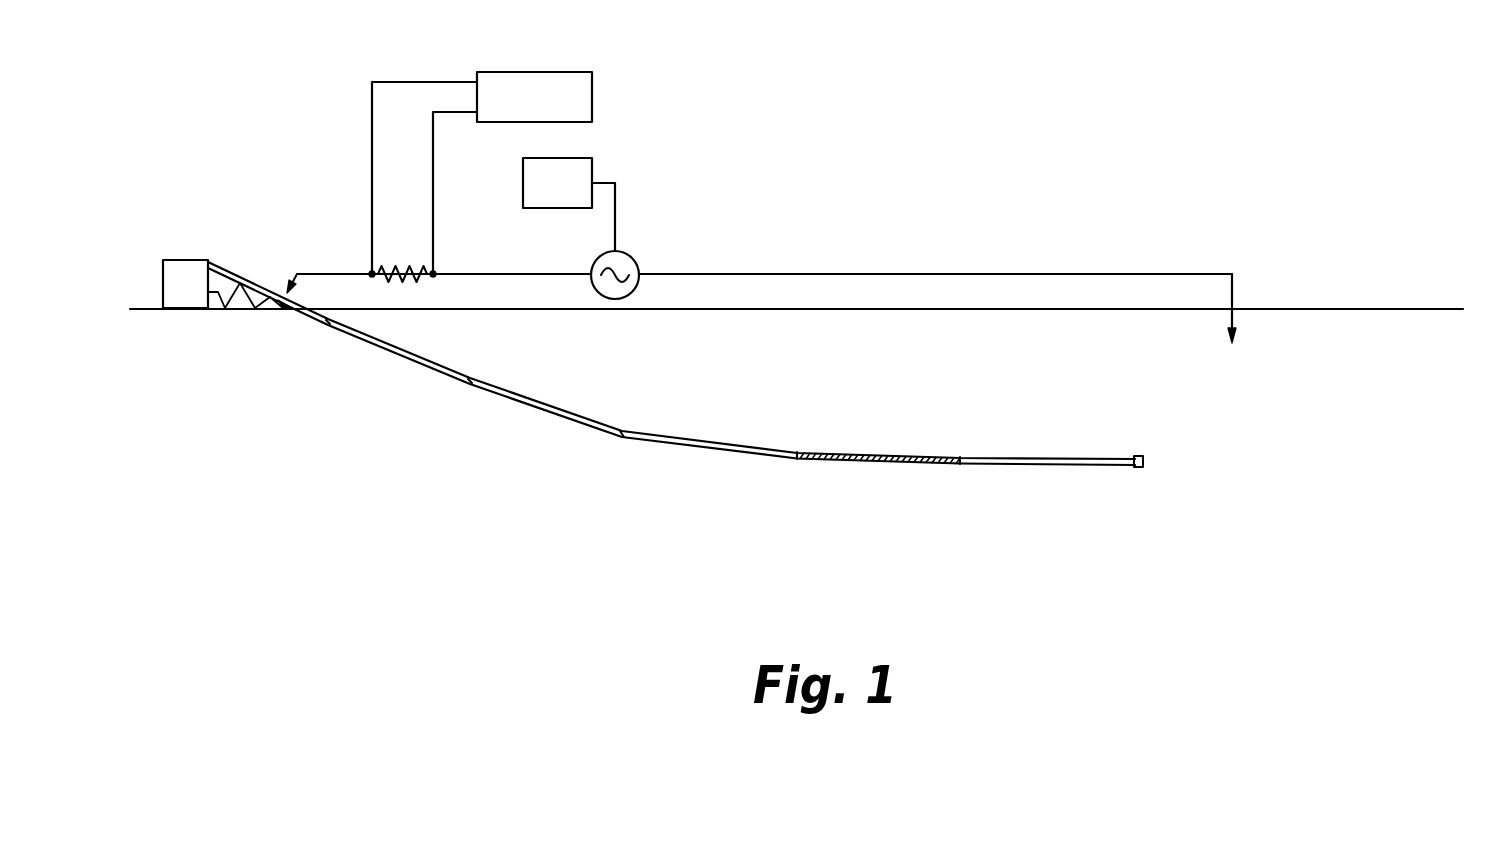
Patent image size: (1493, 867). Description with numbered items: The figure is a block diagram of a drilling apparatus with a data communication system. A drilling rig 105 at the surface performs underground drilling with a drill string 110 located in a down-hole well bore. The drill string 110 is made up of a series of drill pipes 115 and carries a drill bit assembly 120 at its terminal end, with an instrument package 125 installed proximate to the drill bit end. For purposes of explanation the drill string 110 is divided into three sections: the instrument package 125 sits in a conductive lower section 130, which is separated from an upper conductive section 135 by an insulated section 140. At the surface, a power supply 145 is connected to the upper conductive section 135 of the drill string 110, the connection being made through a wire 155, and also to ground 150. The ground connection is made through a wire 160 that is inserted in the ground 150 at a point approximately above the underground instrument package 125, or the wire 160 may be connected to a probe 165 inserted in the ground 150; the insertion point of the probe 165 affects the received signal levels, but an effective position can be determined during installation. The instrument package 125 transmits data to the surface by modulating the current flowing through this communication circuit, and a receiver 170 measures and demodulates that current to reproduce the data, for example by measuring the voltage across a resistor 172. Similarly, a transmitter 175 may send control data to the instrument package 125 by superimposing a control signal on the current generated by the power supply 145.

The drilling rig 105 is at (213, 310).
The drill string 110 is at (813, 411).
The drill pipes 115 is at (308, 313).
The drill bit assembly 120 is at (1140, 468).
The instrument package 125 is at (1105, 458).
The conductive lower section 130 is at (1045, 457).
The upper conductive section 135 is at (565, 418).
The insulated section 140 is at (875, 463).
The surface power supply 145 is at (637, 260).
The ground 150 is at (1343, 370).
The wire 155 is at (327, 272).
The wire 160 is at (950, 273).
The probe 165 is at (1233, 290).
The receiver 170 is at (597, 92).
The resistor 172 is at (412, 264).
The transmitter 175 is at (597, 168).